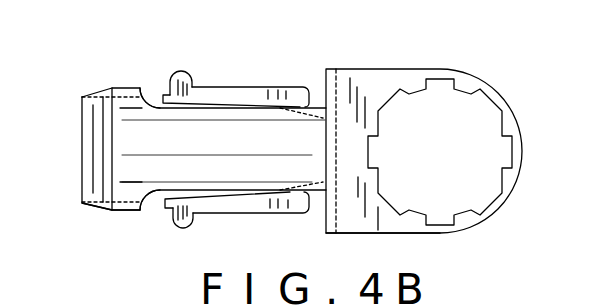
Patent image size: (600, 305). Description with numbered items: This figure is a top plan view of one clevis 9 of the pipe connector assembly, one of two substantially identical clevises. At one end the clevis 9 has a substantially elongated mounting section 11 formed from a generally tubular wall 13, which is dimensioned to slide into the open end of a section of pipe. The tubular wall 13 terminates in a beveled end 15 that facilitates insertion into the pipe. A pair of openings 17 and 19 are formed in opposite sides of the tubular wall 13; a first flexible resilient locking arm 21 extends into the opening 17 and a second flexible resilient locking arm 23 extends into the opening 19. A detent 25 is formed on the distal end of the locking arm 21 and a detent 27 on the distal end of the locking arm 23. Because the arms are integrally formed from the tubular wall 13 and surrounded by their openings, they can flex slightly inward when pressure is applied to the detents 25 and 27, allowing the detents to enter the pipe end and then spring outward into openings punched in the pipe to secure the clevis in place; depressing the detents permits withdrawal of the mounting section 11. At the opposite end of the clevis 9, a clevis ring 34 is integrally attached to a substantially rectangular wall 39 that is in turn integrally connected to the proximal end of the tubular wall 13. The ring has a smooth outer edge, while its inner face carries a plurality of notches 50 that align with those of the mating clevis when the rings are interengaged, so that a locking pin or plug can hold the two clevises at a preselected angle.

The clevis 9 is at (378, 56).
The mounting section 11 is at (132, 211).
The tubular wall 13 is at (128, 95).
The beveled end 15 is at (100, 183).
The opening 17 is at (157, 203).
The opening 19 is at (158, 95).
The first flexible resilient locking arm 21 is at (258, 203).
The second flexible resilient locking arm 23 is at (236, 100).
The detent 25 is at (186, 223).
The detent 27 is at (188, 76).
The clevis ring 34 is at (400, 225).
The rectangular wall 39 is at (328, 135).
The notches 50 is at (393, 99).